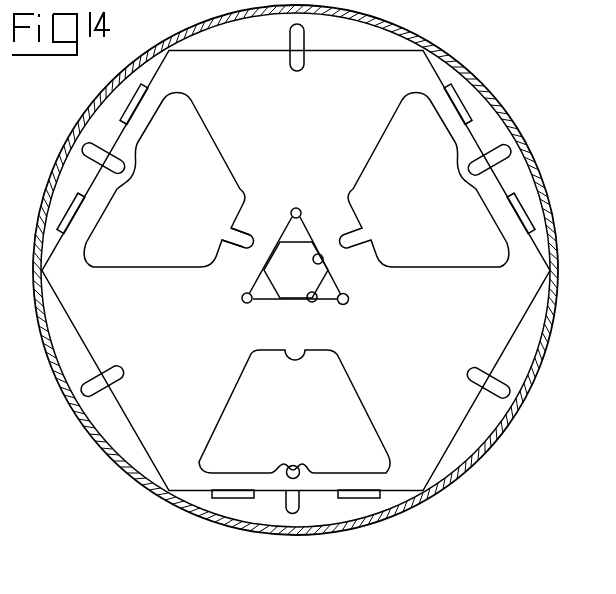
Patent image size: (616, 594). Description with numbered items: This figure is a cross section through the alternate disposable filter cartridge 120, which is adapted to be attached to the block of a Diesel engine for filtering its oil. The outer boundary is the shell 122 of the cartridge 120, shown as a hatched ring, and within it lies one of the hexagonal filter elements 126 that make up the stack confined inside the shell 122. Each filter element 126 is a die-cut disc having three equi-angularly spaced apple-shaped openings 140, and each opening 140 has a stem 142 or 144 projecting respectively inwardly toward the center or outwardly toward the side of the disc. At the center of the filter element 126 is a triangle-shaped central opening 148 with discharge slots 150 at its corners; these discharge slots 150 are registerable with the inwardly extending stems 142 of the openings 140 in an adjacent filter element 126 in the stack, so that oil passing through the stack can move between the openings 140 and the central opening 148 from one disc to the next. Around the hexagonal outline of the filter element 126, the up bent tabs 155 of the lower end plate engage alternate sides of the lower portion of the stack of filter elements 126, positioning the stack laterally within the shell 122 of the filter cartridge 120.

The disposable filter cartridge 120 is at (88, 450).
The shell 122 is at (98, 102).
The filter element 126 is at (80, 338).
The apple-shaped opening 140 is at (214, 140).
The inwardly projecting stem 142 is at (237, 243).
The outwardly projecting stem 144 is at (300, 467).
The triangle-shaped central opening 148 is at (322, 262).
The discharge slot 150 is at (252, 240).
The up bent tab 155 is at (68, 212).